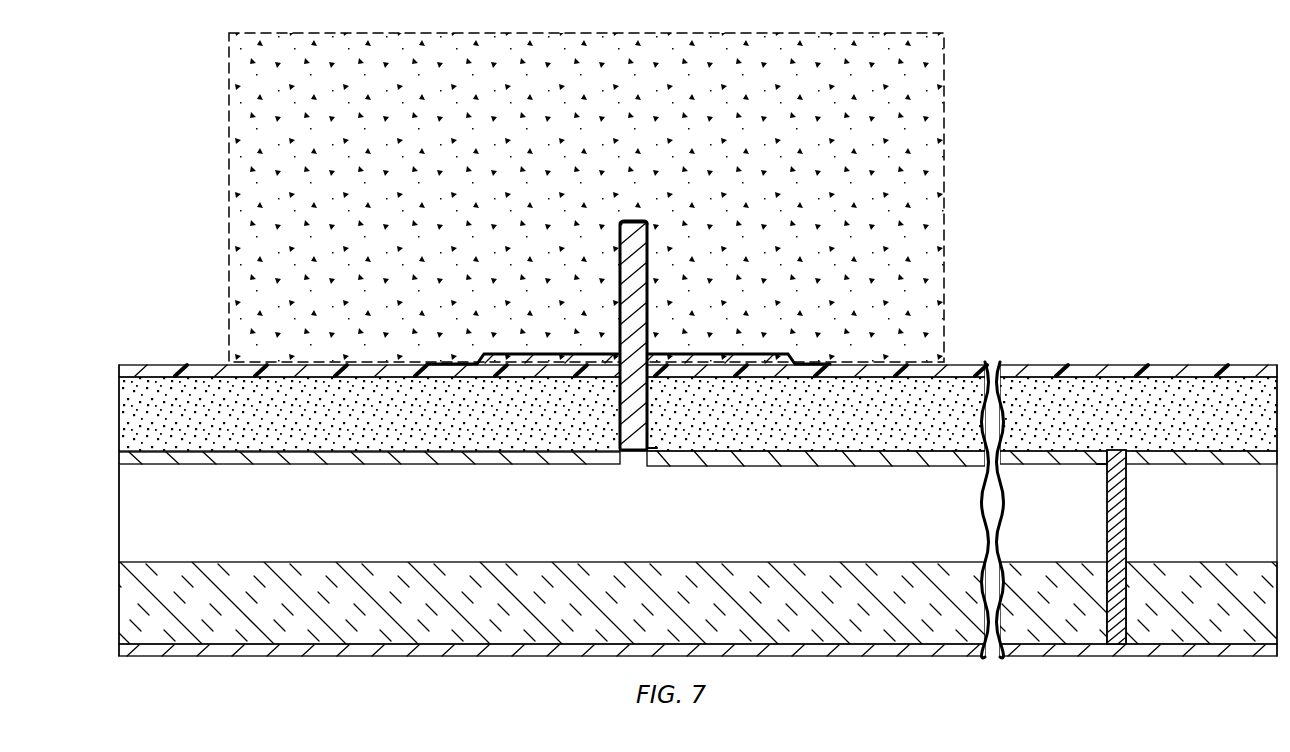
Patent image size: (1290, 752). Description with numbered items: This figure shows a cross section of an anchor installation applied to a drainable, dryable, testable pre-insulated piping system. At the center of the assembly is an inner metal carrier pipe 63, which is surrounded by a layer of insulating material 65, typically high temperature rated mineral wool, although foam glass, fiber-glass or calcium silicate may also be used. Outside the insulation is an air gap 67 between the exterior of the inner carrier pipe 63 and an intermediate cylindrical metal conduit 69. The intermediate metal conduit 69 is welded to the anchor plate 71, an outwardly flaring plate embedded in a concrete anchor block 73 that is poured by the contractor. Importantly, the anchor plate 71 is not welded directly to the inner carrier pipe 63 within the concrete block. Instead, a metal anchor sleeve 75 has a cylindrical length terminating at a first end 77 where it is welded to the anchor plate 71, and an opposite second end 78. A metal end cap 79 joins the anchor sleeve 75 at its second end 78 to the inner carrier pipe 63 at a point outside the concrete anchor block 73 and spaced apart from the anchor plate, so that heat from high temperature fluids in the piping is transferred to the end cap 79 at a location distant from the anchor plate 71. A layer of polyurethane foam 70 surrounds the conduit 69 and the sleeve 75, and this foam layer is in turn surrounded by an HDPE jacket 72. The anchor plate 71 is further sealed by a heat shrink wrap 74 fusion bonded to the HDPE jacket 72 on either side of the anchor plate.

The inner metal carrier pipe 63 is at (328, 658).
The layer of insulating material 65 is at (577, 562).
The air gap 67 is at (148, 511).
The intermediate cylindrical metal conduit 69 is at (352, 466).
The layer of polyurethane foam 70 is at (1109, 390).
The anchor plate 71 is at (636, 302).
The HDPE jacket 72 is at (1062, 362).
The concrete anchor block 73 is at (248, 178).
The heat shrink wrap 74 is at (640, 222).
The metal anchor sleeve 75 is at (886, 466).
The first end 77 is at (655, 440).
The second end 78 is at (1100, 470).
The metal end cap 79 is at (1127, 522).